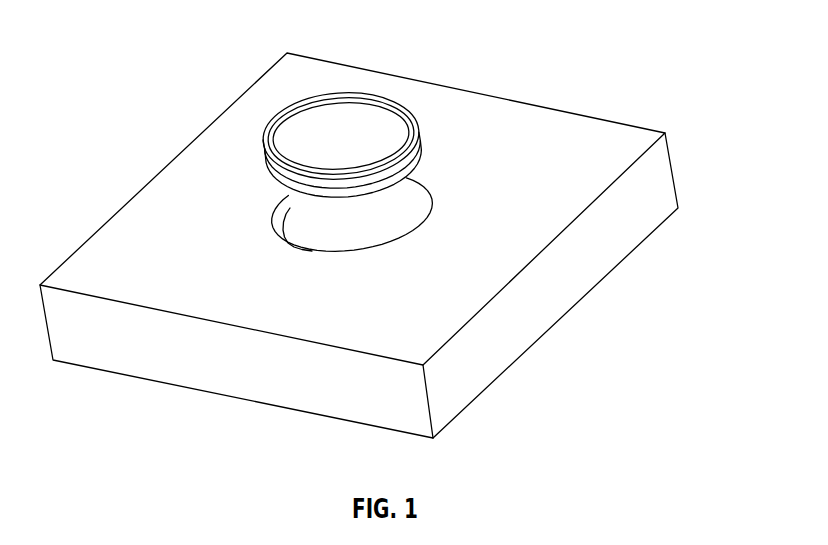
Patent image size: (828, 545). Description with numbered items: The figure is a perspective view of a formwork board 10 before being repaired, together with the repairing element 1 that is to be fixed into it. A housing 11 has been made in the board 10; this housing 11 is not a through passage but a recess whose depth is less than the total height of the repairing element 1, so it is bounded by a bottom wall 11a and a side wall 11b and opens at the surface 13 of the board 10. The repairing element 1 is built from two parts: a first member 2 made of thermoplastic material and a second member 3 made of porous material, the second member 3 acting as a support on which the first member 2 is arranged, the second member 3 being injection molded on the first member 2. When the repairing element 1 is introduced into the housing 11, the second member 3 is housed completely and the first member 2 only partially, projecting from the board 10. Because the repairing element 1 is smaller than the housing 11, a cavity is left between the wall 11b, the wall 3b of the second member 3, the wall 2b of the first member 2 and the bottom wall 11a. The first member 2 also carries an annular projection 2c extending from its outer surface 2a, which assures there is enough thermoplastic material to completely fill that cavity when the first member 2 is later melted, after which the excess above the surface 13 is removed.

The repairing element 1 is at (337, 114).
The first member 2 is at (355, 117).
The outer surface 2a is at (351, 160).
The wall 2b is at (277, 166).
The annular projection 2c is at (271, 121).
The second member 3 is at (421, 152).
The wall 3b is at (290, 188).
The formwork board 10 is at (617, 140).
The housing 11 is at (405, 220).
The bottom wall 11a is at (376, 241).
The wall 11b is at (288, 210).
The surface 13 is at (567, 180).